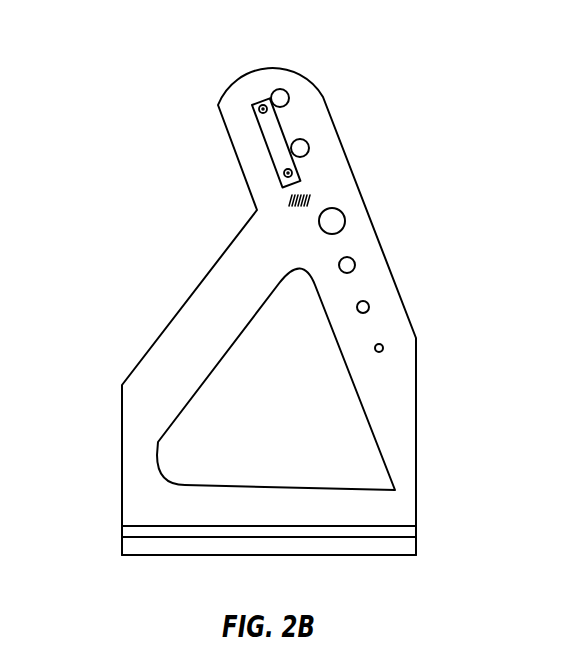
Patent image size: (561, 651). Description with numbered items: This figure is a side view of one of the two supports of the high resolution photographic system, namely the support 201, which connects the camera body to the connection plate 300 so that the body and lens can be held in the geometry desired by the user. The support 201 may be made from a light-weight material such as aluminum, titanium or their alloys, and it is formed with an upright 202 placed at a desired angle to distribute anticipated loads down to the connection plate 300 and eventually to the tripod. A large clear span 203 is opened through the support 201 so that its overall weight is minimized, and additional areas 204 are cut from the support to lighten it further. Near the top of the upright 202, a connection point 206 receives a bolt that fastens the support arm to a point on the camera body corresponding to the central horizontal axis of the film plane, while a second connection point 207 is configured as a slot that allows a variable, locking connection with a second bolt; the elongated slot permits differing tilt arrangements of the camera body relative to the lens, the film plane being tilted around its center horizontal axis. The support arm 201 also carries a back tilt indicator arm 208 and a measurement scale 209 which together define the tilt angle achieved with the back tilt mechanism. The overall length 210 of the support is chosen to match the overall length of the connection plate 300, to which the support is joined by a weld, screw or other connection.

The support 201 is at (124, 58).
The upright 202 is at (200, 307).
The clear span 203 is at (220, 398).
The areas 204 is at (332, 222).
The connection point 206 is at (258, 107).
The connection point 207 is at (300, 168).
The back tilt indicator arm 208 is at (270, 130).
The measurement scale 209 is at (322, 188).
The overall length 210 is at (388, 535).
The connection plate 300 is at (132, 548).